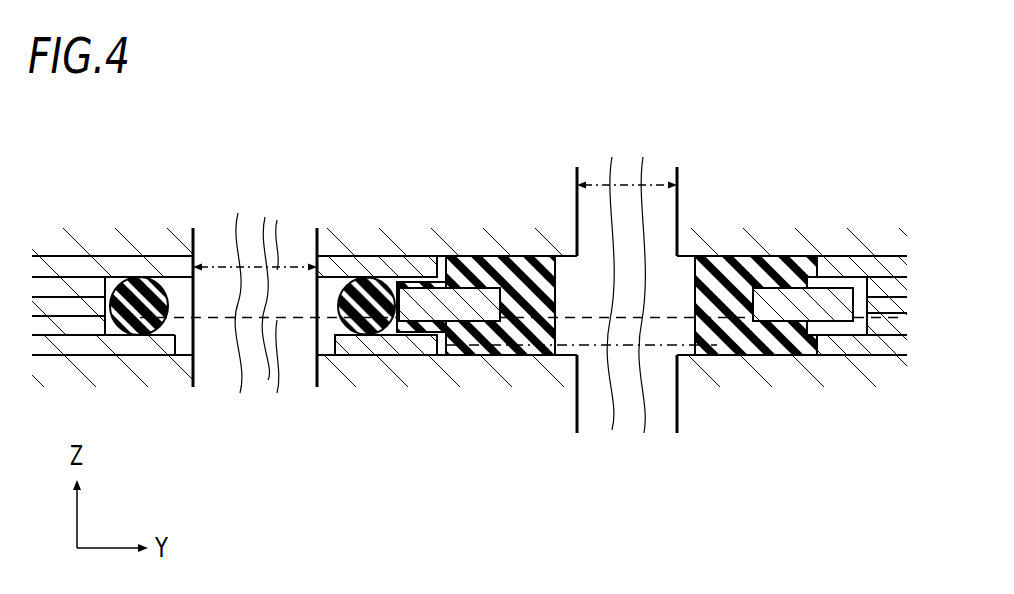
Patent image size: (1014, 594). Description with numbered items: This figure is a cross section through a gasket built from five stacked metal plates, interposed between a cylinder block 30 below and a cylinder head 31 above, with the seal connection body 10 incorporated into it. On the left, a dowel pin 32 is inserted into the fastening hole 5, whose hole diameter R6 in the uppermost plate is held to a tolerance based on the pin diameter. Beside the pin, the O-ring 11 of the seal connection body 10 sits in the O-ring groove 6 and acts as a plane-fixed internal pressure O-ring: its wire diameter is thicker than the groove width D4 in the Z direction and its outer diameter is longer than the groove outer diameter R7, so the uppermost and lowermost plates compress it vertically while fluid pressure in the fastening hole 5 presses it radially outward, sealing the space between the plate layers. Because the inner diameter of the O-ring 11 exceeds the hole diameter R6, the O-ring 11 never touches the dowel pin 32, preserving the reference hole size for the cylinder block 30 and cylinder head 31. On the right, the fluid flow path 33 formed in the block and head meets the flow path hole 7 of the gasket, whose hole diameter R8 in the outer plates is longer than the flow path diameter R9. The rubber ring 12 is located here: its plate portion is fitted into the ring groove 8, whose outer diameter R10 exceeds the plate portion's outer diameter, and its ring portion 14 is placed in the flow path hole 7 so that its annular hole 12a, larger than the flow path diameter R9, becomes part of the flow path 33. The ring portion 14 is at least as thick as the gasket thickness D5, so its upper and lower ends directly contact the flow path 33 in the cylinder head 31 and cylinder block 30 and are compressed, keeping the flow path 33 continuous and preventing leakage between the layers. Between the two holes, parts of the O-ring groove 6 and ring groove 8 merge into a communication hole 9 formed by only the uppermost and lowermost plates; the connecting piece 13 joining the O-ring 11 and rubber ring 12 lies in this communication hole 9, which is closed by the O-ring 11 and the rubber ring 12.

The fastening hole 5 is at (316, 252).
The O-ring groove 6 is at (120, 290).
The flow path hole 7 is at (806, 256).
The ring groove 8 is at (862, 293).
The communication hole 9 is at (385, 280).
The seal connection body 10 is at (498, 249).
The O-ring 11 is at (147, 283).
The rubber ring 12 is at (529, 247).
The annular hole 12a is at (690, 250).
The connecting piece 13 is at (422, 277).
The ring portion 14 is at (752, 255).
The cylinder block 30 is at (343, 354).
The cylinder head 31 is at (342, 256).
The dowel pin 32 is at (192, 228).
The fluid flow path 33 is at (576, 185).
The width of the O-ring groove D4 is at (148, 335).
The thickness of the gasket D5 is at (882, 300).
The hole diameter of the fastening hole R6 is at (224, 262).
The outer diameter of the O-ring groove R7 is at (207, 320).
The hole diameter of the flow path hole R8 is at (590, 347).
The flow path diameter R9 is at (655, 182).
The outer diameter of the ring groove R10 is at (600, 316).